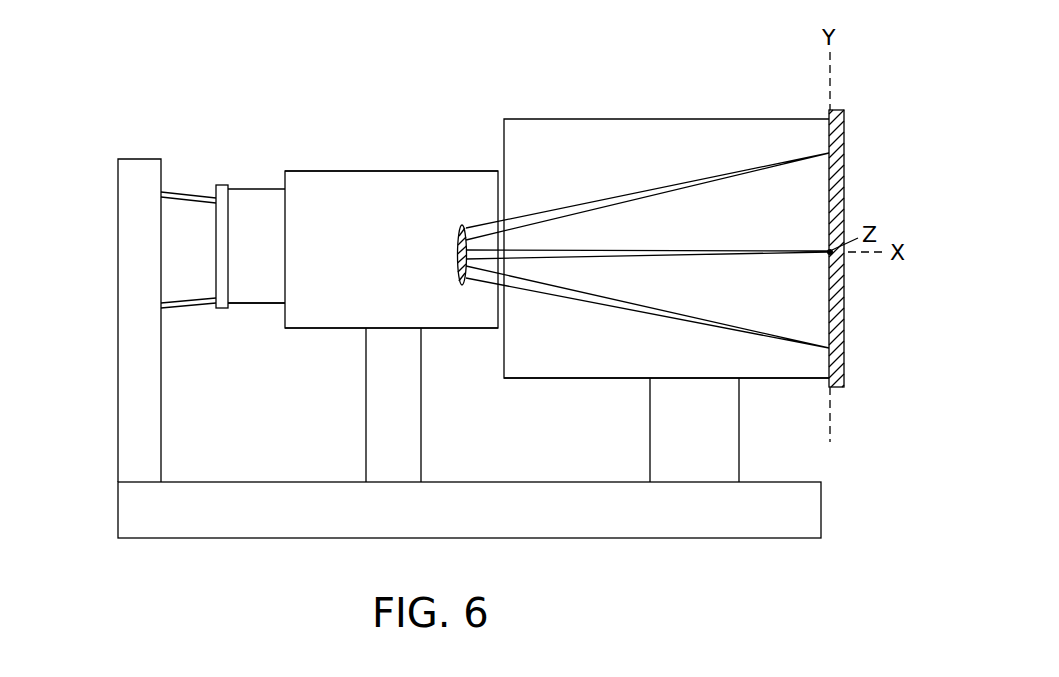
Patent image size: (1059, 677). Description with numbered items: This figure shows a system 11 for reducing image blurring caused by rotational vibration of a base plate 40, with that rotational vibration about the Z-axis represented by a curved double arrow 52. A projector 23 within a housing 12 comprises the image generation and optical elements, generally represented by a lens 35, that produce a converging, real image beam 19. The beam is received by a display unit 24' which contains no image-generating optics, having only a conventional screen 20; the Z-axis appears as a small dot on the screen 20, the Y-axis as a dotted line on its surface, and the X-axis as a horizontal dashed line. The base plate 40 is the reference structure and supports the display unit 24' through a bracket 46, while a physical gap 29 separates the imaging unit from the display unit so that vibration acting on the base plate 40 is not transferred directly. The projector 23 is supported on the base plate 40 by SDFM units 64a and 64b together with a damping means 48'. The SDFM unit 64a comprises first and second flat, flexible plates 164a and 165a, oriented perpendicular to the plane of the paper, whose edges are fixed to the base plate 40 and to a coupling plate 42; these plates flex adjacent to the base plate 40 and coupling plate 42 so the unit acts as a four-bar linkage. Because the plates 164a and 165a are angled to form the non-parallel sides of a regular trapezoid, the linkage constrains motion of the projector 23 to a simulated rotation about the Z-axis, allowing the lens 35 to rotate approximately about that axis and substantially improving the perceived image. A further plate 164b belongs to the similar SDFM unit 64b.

The system 11 is at (419, 137).
The housing 12 is at (340, 328).
The real image beam 19 is at (623, 296).
The screen 20 is at (828, 386).
The projector 23 is at (371, 159).
The display unit 24' is at (666, 405).
The gap 29 is at (504, 119).
The lens 35 is at (463, 285).
The base plate 40 is at (161, 472).
The coupling plate 42 is at (220, 183).
The bracket 46 is at (650, 432).
The damping means 48' is at (358, 405).
The curved double arrow 52 is at (85, 527).
The SDFM unit 64a is at (170, 345).
The SDFM unit 64b is at (263, 176).
The first flexible plate 164a is at (180, 194).
The rod 164b is at (255, 305).
The second flexible plate 165a is at (190, 308).